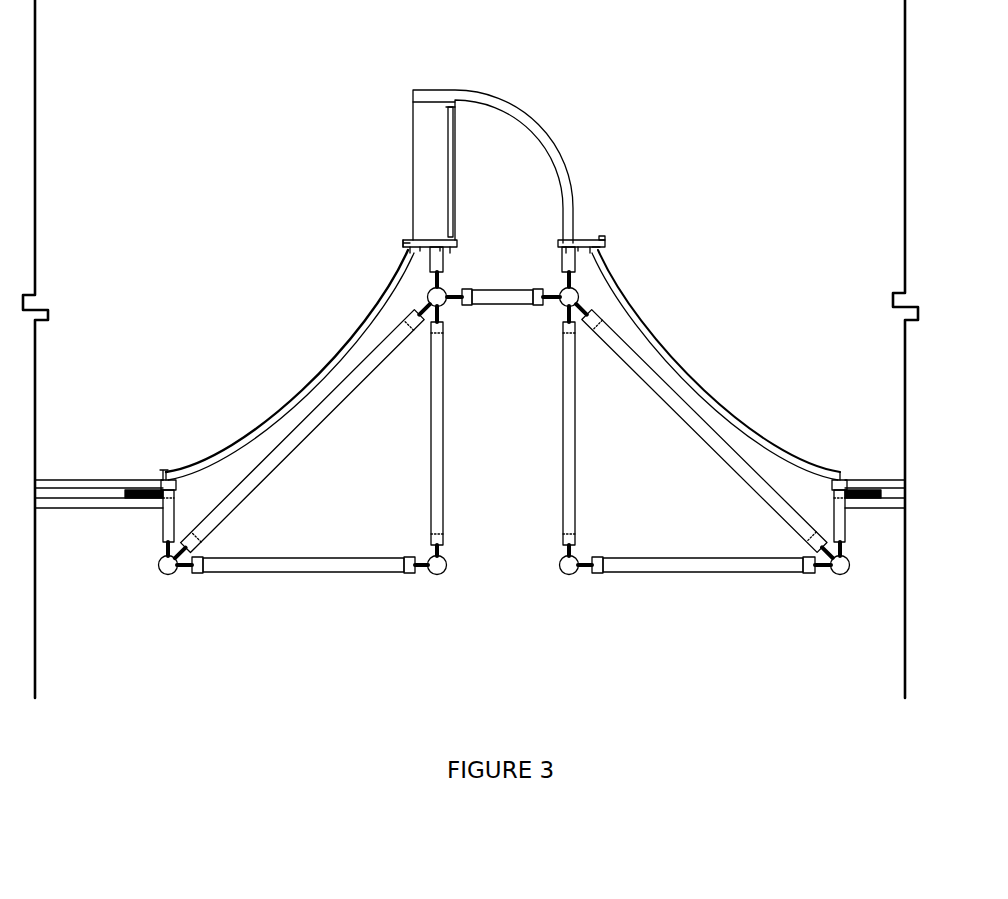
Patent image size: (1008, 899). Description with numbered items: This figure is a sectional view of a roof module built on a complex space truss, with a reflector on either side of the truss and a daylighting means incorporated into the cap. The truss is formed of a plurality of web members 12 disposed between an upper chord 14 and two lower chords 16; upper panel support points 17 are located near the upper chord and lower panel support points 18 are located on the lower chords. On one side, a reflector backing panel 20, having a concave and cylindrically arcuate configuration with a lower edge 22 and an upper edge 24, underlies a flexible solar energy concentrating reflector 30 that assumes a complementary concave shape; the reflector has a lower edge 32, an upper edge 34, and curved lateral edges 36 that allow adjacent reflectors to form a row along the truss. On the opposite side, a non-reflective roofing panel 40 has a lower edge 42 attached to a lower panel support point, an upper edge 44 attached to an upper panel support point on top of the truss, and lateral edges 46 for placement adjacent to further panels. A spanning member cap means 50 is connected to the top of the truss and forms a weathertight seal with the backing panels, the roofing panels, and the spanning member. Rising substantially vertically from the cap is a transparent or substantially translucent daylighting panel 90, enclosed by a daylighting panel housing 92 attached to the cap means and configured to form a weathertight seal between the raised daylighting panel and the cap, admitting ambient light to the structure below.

The web members 12 is at (504, 431).
The upper chord 14 is at (436, 302).
The lower chords 16 is at (504, 617).
The upper panel support points 17 is at (492, 269).
The lower panel support points 18 is at (246, 521).
The reflector backing panel 20 is at (287, 361).
The lower edge 22 is at (470, 469).
The upper edge 24 is at (312, 200).
The solar energy concentrating reflector 30 is at (291, 366).
The lower edge 32 is at (115, 405).
The upper edge 34 is at (289, 228).
The curved lateral edges 36 is at (208, 438).
The non-reflective roofing panel 40 is at (719, 361).
The lower edge 42 is at (715, 366).
The upper edge 44 is at (864, 461).
The lateral edges 46 is at (716, 363).
The spanning member cap means 50 is at (627, 229).
The daylighting panel 90 is at (485, 172).
The daylighting panel housing 92 is at (493, 132).